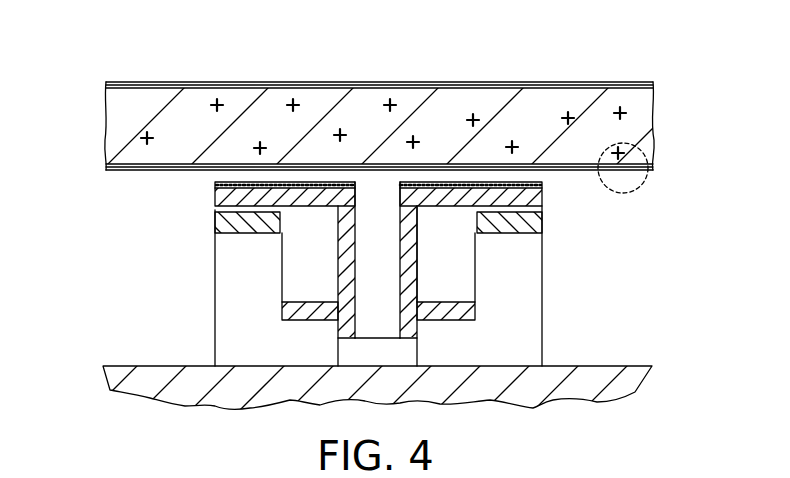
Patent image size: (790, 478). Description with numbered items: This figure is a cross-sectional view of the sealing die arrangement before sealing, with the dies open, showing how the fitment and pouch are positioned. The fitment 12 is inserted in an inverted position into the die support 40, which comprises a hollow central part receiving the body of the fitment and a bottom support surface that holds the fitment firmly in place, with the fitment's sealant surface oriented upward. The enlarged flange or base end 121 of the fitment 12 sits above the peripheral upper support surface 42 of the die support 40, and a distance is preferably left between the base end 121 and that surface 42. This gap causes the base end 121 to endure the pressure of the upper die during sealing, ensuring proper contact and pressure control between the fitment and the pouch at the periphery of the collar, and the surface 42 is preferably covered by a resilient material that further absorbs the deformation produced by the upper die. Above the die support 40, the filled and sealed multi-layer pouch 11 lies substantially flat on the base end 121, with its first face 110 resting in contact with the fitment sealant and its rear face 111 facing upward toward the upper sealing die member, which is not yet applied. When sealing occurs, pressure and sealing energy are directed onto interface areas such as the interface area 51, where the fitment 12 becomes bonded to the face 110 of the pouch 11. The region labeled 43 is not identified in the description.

The multi-layer pouch 11 is at (374, 129).
The first face of the pouch 110 is at (147, 171).
The rear face of the pouch 111 is at (387, 82).
The fitment 12 is at (458, 278).
The base end 121 is at (447, 206).
The die support 40 is at (377, 318).
The peripheral upper support surface 42 is at (297, 265).
The right electrode block 43 is at (542, 222).
The interface area 51 is at (307, 320).